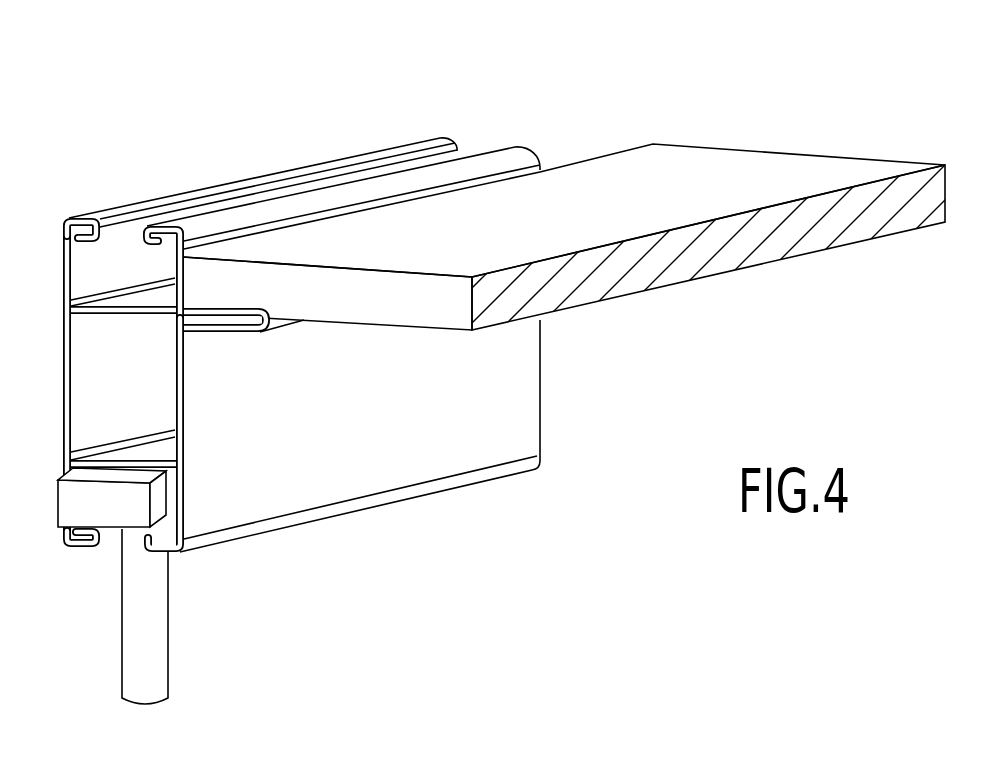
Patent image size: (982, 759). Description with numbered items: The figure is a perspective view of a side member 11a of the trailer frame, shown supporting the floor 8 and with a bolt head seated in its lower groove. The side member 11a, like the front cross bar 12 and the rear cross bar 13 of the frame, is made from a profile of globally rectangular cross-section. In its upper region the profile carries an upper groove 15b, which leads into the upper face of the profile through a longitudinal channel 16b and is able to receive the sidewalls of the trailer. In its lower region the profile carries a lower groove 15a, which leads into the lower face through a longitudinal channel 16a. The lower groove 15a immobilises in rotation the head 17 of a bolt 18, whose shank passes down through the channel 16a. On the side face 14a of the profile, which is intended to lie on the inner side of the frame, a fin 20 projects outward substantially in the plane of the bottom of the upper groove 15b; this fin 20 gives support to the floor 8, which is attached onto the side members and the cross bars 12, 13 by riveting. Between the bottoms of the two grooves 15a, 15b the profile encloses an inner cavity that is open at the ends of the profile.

The floor 8 is at (722, 168).
The side member 11a is at (288, 358).
The front cross bar 12 is at (288, 358).
The rear cross bar 13 is at (288, 358).
The side face 14a is at (398, 463).
The lower groove 15a is at (127, 481).
The upper groove 15b is at (128, 267).
The lower longitudinal channel 16a is at (105, 547).
The upper longitudinal channel 16b is at (347, 170).
The bolt head 17 is at (131, 492).
The bolt 18 is at (149, 628).
The fin 20 is at (246, 330).